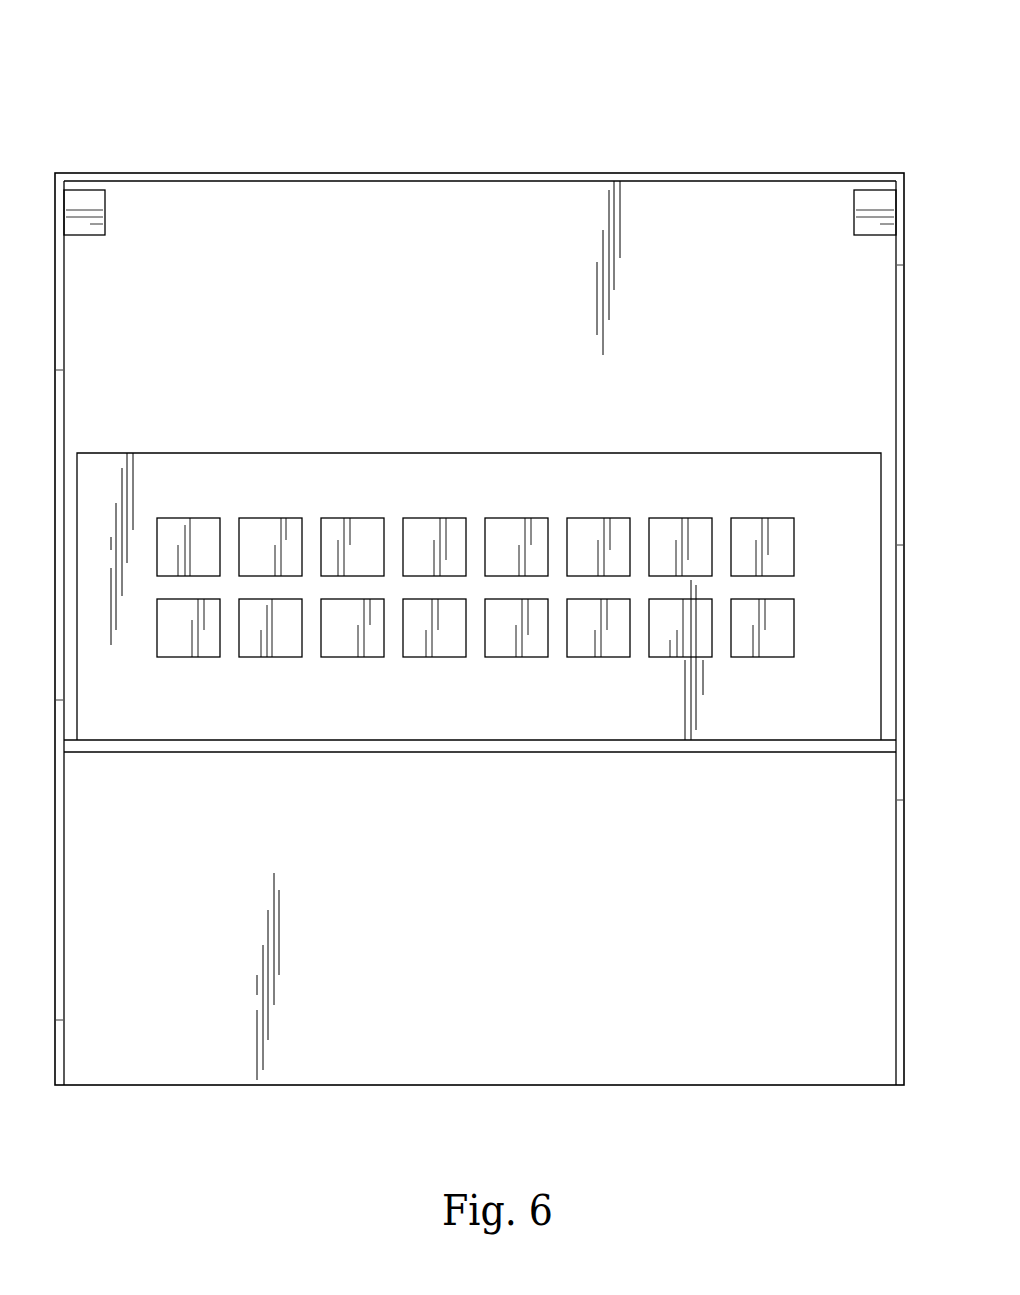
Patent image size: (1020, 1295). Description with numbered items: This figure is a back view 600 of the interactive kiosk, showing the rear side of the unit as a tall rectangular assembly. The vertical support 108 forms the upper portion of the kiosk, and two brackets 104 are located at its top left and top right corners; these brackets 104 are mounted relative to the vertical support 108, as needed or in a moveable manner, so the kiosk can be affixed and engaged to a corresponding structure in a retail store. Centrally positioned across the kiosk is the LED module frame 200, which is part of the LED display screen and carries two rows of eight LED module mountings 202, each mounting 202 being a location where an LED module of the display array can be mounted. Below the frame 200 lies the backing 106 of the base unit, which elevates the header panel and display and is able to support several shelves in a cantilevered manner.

The back view 600 is at (285, 81).
The brackets 104 is at (88, 190).
The vertical support 108 is at (482, 340).
The LED module frame 200 is at (288, 712).
The LED module mountings 202 is at (795, 615).
The backing 106 is at (482, 932).